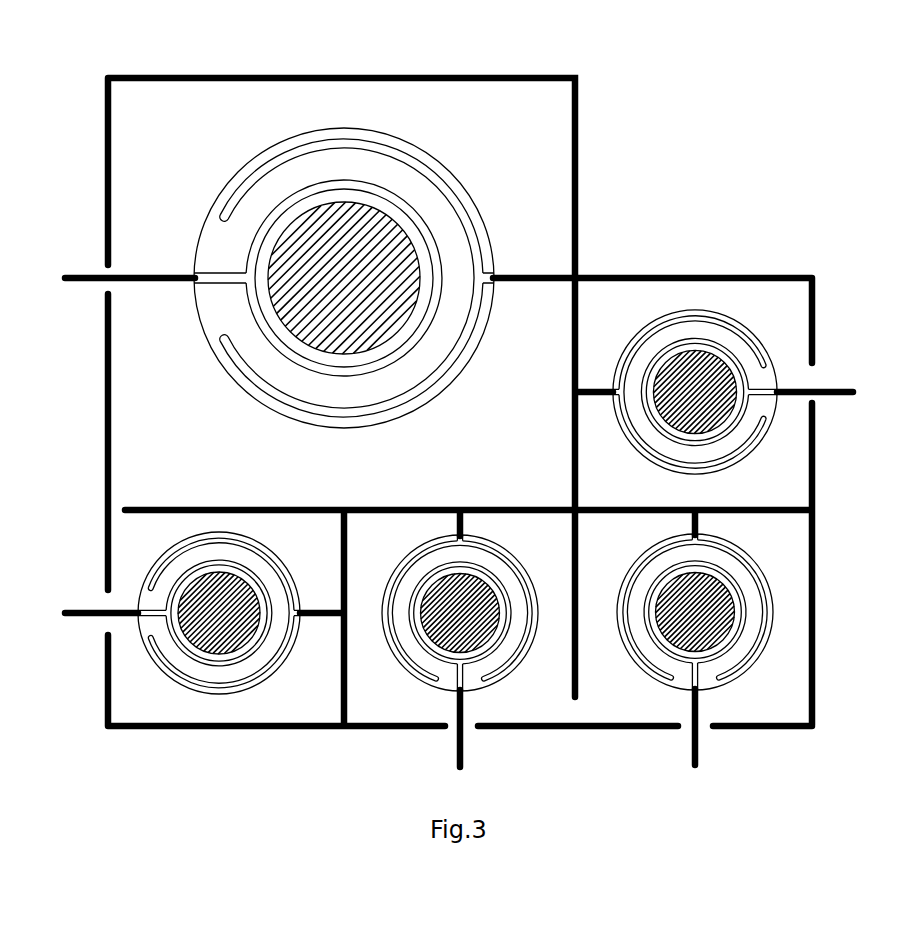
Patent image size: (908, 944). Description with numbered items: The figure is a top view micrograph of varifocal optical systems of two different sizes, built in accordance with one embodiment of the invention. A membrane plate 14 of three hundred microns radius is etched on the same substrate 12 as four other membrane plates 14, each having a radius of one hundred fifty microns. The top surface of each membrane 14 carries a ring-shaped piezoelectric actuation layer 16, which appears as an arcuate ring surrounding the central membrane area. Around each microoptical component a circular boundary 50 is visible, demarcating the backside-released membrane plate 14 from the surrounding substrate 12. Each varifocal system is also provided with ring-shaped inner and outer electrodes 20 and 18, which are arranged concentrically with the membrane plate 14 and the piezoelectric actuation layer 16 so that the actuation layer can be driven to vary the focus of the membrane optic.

The substrate 12 is at (202, 98).
The membrane plate 14 is at (380, 240).
The ring-shaped piezoelectric actuation layer 16 is at (378, 175).
The outer electrode 18 is at (265, 397).
The inner electrode 20 is at (253, 323).
The circular boundary 50 is at (437, 162).